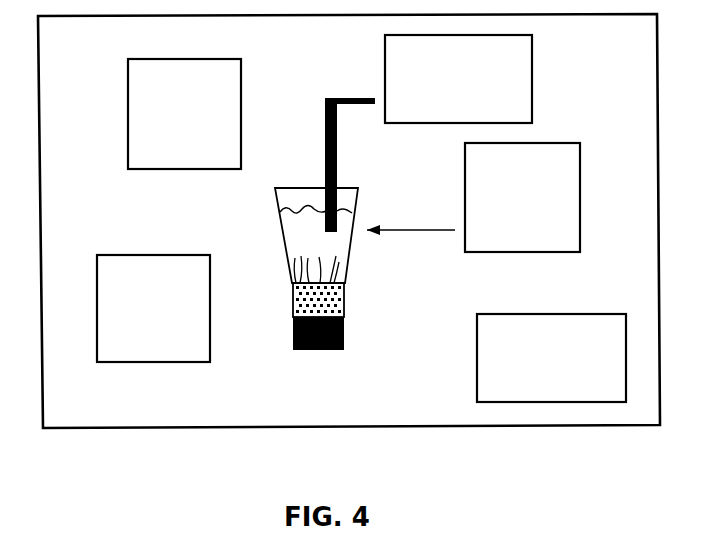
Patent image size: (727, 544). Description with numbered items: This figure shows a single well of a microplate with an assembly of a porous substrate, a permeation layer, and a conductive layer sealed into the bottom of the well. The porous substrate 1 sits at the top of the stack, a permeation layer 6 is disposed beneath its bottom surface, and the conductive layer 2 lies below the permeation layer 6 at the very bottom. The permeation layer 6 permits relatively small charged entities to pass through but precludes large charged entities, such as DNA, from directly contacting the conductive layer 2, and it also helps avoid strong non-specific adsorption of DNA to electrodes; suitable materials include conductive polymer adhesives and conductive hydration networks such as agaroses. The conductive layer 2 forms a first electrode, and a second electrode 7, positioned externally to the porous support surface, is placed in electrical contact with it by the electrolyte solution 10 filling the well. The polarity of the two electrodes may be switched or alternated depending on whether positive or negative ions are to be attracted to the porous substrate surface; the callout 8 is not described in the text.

The porous substrate 1 is at (347, 283).
The conductive layer 2 is at (355, 335).
The permeation layer 6 is at (288, 296).
The second electrode 7 is at (348, 98).
The gas bubbles rising in liquid 8 is at (307, 250).
The electrolyte solution 10 is at (302, 220).